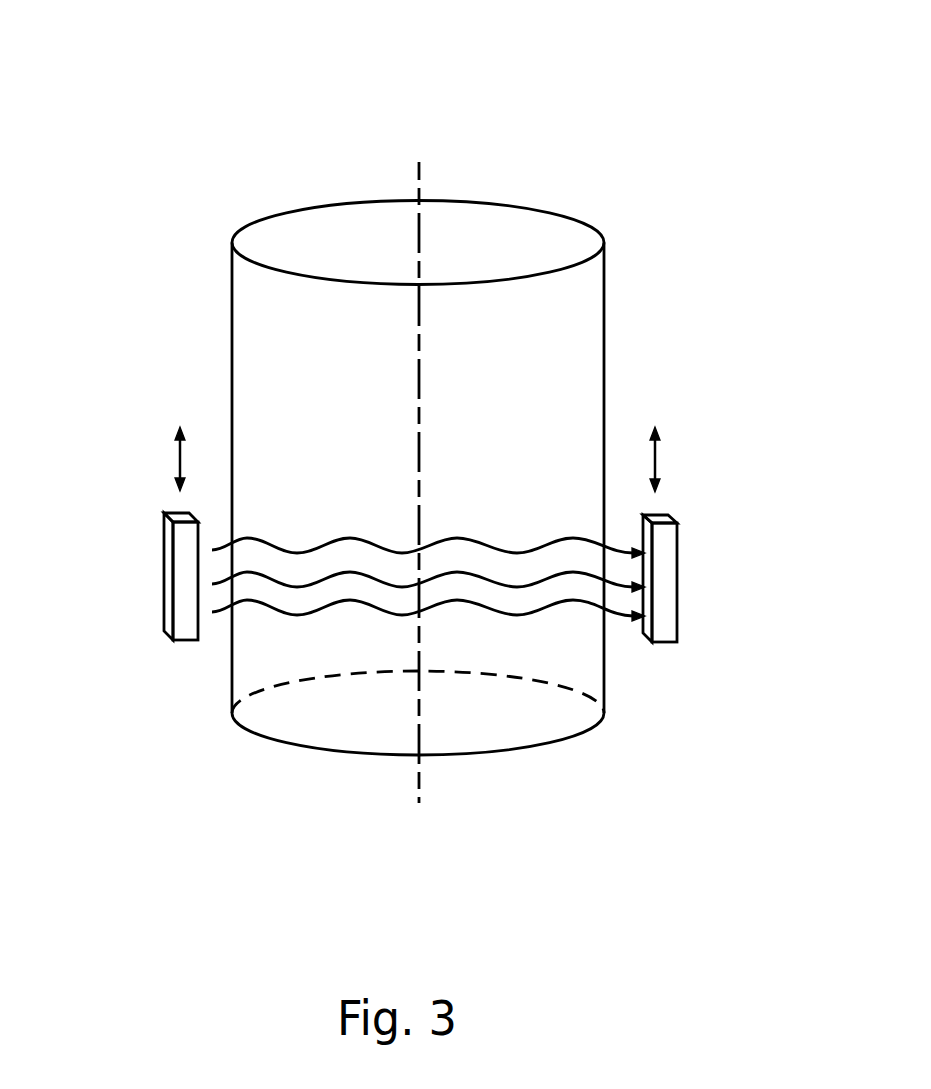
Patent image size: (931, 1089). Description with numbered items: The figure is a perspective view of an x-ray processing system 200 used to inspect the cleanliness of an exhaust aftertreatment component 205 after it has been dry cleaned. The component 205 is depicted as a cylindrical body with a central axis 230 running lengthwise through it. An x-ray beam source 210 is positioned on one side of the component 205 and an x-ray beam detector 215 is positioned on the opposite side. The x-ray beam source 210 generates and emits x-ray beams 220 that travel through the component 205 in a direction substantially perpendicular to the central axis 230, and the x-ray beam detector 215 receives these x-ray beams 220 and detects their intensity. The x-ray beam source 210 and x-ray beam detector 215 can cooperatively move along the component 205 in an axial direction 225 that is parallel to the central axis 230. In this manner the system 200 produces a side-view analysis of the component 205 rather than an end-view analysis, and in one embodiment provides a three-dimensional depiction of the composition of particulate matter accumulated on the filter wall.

The x-ray processing system 200 is at (657, 63).
The component 205 is at (473, 203).
The x-ray beam source 210 is at (166, 582).
The x-ray beam detector 215 is at (678, 577).
The x-ray beams 220 is at (343, 605).
The axial direction 225 is at (181, 464).
The central axis 230 is at (419, 178).